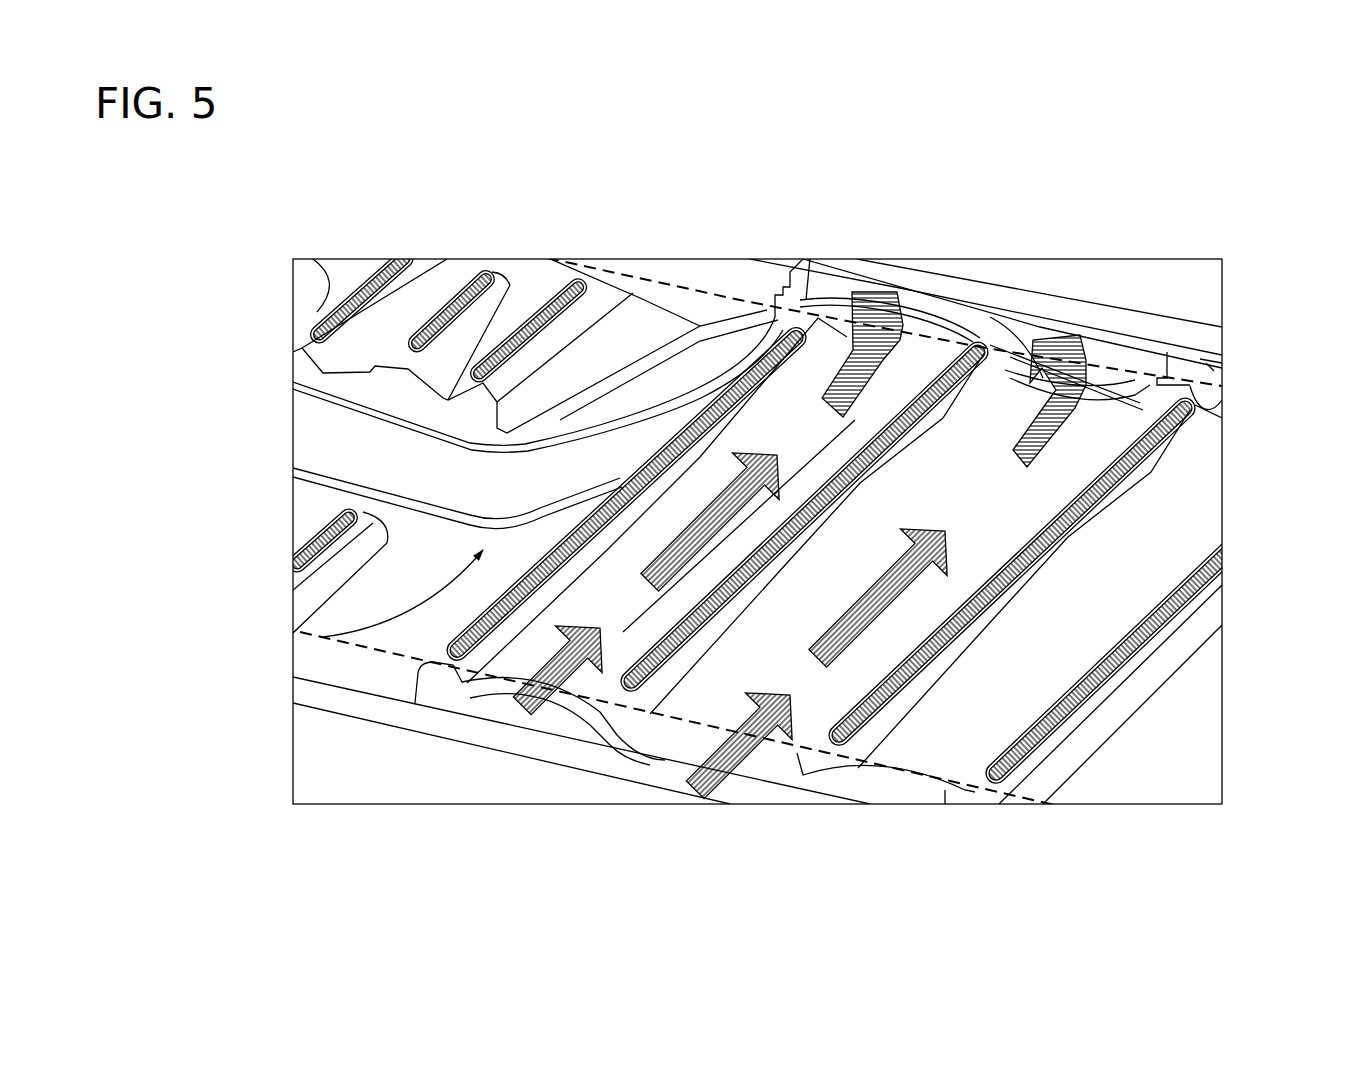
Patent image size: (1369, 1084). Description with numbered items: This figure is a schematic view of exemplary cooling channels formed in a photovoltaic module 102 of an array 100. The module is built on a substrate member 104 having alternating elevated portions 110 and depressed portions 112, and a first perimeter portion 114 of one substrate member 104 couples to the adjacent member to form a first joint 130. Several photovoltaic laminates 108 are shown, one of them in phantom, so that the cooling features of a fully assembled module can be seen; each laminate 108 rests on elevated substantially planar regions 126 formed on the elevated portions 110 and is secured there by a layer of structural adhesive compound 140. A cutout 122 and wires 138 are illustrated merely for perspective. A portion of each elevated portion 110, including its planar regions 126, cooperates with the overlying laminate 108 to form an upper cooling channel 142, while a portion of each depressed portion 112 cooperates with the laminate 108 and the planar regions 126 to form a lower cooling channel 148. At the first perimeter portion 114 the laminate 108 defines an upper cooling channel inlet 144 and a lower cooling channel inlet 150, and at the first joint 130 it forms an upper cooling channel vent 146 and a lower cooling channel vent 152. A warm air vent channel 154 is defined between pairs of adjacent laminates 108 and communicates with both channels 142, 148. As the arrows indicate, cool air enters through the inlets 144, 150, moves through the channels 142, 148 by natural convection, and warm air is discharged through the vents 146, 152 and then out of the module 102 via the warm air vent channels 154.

The array 100 is at (233, 224).
The photovoltaic module 102 is at (273, 746).
The substrate member 104 is at (1180, 692).
The photovoltaic laminate 108 is at (1068, 265).
The elevated portion 110 is at (457, 677).
The depressed portion 112 is at (636, 760).
The first perimeter portion 114 is at (475, 687).
The cutout 122 is at (378, 455).
The elevated substantially planar region 126 is at (607, 505).
The first joint 130 is at (929, 315).
The wires 138 is at (303, 633).
The layer of structural adhesive compound 140 is at (1103, 487).
The upper cooling channel 142 is at (634, 610).
The upper cooling channel inlet 144 is at (570, 713).
The upper cooling channel vent 146 is at (813, 300).
The lower cooling channel 148 is at (1010, 512).
The lower cooling channel inlet 150 is at (763, 772).
The lower cooling channel vent 152 is at (1135, 380).
The warm air vent channel 154 is at (1234, 381).